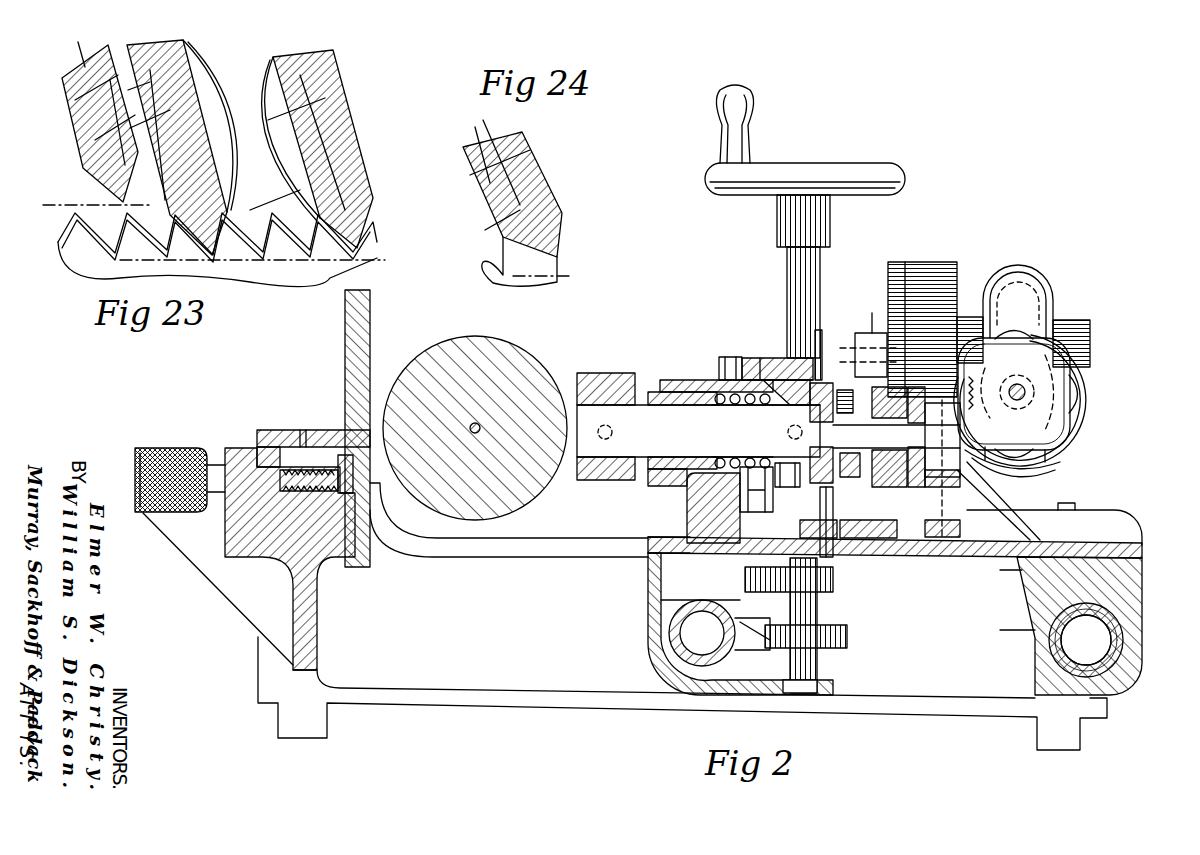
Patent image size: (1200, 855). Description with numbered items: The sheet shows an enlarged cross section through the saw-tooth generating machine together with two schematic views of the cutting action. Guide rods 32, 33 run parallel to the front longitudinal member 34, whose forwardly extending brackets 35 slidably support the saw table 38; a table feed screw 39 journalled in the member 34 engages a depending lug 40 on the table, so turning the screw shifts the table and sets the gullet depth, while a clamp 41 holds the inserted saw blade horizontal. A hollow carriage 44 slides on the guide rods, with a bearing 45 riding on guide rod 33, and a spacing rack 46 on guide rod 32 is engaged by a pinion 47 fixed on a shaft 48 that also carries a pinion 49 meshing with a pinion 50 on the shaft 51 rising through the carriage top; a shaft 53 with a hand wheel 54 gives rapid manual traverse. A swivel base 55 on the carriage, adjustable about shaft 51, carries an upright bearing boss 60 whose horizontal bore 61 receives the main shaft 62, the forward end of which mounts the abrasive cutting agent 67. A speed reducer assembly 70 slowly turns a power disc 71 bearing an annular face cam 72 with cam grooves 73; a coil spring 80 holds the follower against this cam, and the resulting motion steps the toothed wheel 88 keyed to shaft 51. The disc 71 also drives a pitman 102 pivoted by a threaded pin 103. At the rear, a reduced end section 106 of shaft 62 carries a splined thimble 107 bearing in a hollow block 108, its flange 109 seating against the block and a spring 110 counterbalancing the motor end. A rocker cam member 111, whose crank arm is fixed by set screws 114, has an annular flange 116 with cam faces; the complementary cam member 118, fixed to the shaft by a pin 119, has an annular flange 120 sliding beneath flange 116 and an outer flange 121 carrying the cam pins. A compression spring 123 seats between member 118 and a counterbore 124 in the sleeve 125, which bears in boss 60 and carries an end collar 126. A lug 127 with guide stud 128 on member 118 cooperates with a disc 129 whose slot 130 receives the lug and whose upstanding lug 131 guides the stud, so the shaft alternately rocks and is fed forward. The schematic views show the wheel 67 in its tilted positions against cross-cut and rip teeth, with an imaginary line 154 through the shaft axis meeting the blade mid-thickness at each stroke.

In FIG. 2, the guide rod 32 is at (665, 652).
In FIG. 2, the guide rod 33 is at (1056, 658).
In FIG. 2, the front longitudinal member 34 is at (322, 562).
In FIG. 2, the brackets 35 is at (265, 610).
In FIG. 2, the saw table 38 is at (332, 428).
In FIG. 2, the table feed screw 39 is at (238, 480).
In FIG. 2, the depending lug 40 is at (266, 445).
In FIG. 2, the clamp 41 is at (362, 345).
In FIG. 2, the carriage 44 is at (650, 605).
In FIG. 2, the bearing 45 is at (1038, 630).
In FIG. 2, the spacing rack 46 is at (748, 620).
In FIG. 2, the pinion 47 is at (815, 640).
In FIG. 2, the shaft 48 is at (790, 663).
In FIG. 2, the pinion 49 is at (700, 583).
In FIG. 2, the pinion 50 is at (796, 607).
In FIG. 2, the shaft 51 is at (861, 538).
In FIG. 2, the shaft 53 is at (803, 300).
In FIG. 2, the hand wheel 54 is at (790, 175).
In FIG. 2, the swivel base 55 is at (1138, 545).
In FIG. 2, the upright bearing boss 60 is at (660, 487).
In FIG. 2, the horizontal bore 61 is at (693, 380).
In FIG. 2, the main shaft 62 is at (632, 418).
In FIG. 23, the cutting agent 67 is at (190, 118).
In FIG. 24, the cutting agent 67 is at (518, 146).
In FIG. 2, the speed reducer assembly 70 is at (1030, 330).
In FIG. 2, the power disc 71 is at (900, 290).
In FIG. 2, the annular face cam 72 is at (935, 300).
In FIG. 2, the cam grooves 73 is at (1078, 436).
In FIG. 2, the coil spring 80 is at (972, 486).
In FIG. 2, the toothed wheel 88 is at (905, 558).
In FIG. 2, the pitman 102 is at (880, 312).
In FIG. 2, the threaded pin 103 is at (870, 342).
In FIG. 2, the rear end section 106 is at (1000, 440).
In FIG. 2, the thimble 107 is at (900, 388).
In FIG. 2, the hollow block 108 is at (945, 405).
In FIG. 2, the flange 109 is at (848, 386).
In FIG. 2, the spring 110 is at (864, 528).
In FIG. 2, the rocker cam member 111 is at (780, 483).
In FIG. 2, the set screws 114 is at (859, 477).
In FIG. 2, the annular flange 116 is at (837, 332).
In FIG. 2, the complementary cam member 118 is at (743, 431).
In FIG. 2, the pin or set screw 119 is at (786, 432).
In FIG. 2, the annular flange 120 is at (885, 433).
In FIG. 2, the flange 121 is at (790, 350).
In FIG. 2, the compression spring 123 is at (700, 475).
In FIG. 2, the counterbore 124 is at (698, 431).
In FIG. 2, the sleeve 125 is at (612, 438).
In FIG. 2, the end collar 126 is at (665, 392).
In FIG. 2, the lug 127 is at (760, 358).
In FIG. 2, the guide stud 128 is at (765, 358).
In FIG. 2, the disc 129 is at (662, 553).
In FIG. 2, the slot 130 is at (759, 498).
In FIG. 2, the upstanding lug 131 is at (728, 357).
In FIG. 23, the imaginary line 154 is at (318, 98).